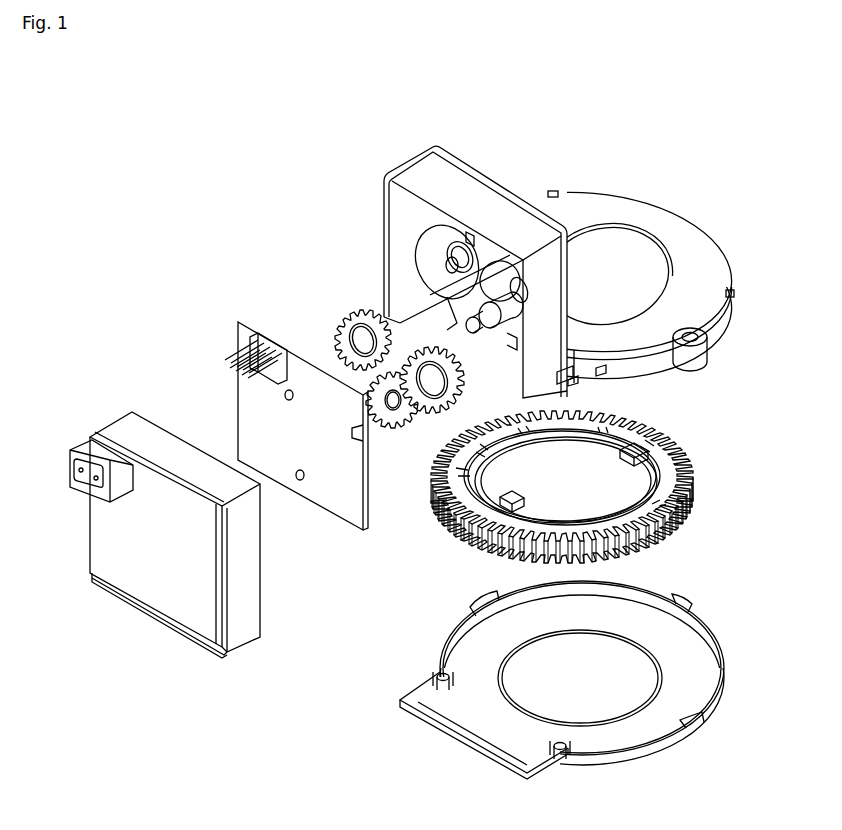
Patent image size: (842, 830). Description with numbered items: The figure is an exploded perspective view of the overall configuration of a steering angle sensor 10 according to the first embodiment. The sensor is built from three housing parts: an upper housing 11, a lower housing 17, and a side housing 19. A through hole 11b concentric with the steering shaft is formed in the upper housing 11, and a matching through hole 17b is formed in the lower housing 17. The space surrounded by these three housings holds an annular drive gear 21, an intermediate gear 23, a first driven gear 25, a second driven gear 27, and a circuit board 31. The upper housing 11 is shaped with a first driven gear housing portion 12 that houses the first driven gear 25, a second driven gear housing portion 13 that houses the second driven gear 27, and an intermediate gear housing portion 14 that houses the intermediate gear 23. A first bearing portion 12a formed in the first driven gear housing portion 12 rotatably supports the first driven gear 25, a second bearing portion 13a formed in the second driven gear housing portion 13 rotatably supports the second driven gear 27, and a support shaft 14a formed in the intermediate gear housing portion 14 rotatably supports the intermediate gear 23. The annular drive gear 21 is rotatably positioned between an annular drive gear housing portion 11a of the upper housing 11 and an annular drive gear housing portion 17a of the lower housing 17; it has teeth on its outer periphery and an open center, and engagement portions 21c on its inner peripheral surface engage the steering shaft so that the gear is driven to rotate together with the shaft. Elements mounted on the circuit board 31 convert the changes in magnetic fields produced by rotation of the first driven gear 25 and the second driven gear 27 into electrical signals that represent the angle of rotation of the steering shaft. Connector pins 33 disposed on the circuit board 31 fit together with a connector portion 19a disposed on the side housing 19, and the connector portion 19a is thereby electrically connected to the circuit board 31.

The steering angle sensor 10 is at (645, 122).
The upper housing 11 is at (589, 280).
The annular drive gear housing portion 11a is at (660, 384).
The through hole 11b is at (617, 252).
The first driven gear housing portion 12 is at (431, 246).
The first bearing portion 12a is at (451, 256).
The second driven gear housing portion 13 is at (497, 277).
The second bearing portion 13a is at (514, 290).
The intermediate gear housing portion 14 is at (488, 312).
The support shaft 14a is at (440, 270).
The lower housing 17 is at (577, 666).
The annular drive gear housing portion 17a is at (679, 636).
The through hole 17b is at (622, 672).
The side housing 19 is at (165, 512).
The connector portion 19a is at (86, 452).
The annular drive gear 21 is at (665, 420).
The engagement portions 21c is at (497, 503).
The intermediate gear 23 is at (391, 445).
The first driven gear 25 is at (343, 318).
The second driven gear 27 is at (466, 371).
The circuit board 31 is at (272, 328).
The connector pins 33 is at (242, 350).